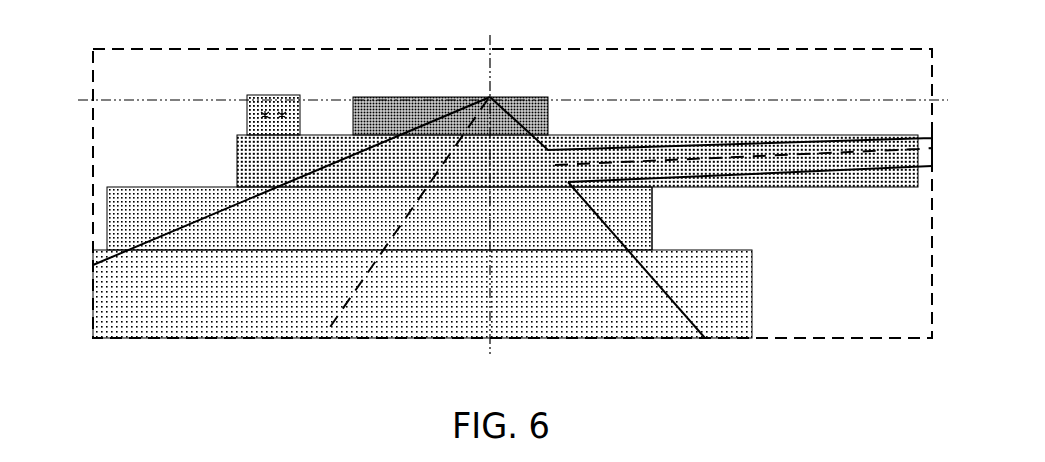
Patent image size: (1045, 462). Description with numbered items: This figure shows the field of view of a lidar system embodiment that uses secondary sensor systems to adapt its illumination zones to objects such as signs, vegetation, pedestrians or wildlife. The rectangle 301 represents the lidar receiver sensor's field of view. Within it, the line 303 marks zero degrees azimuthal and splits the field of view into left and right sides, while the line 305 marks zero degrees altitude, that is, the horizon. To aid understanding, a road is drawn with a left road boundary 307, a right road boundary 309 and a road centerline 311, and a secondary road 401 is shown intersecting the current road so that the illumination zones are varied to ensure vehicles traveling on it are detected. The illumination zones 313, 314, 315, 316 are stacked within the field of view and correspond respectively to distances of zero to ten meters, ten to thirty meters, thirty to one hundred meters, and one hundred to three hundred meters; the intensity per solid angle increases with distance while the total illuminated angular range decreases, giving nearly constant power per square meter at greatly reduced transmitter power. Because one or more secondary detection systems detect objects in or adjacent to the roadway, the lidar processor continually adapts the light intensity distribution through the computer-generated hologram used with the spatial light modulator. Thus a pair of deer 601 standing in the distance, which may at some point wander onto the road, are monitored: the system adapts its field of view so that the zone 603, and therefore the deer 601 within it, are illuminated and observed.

The rectangle 301 is at (620, 50).
The line 303 is at (490, 352).
The line 305 is at (83, 100).
The left road boundary 307 is at (187, 223).
The right road boundary 309 is at (670, 296).
The road centerline 311 is at (362, 282).
The illumination zone 313 is at (756, 294).
The illumination zone 314 is at (656, 231).
The illumination zone 315 is at (233, 175).
The illumination zone 316 is at (553, 117).
The secondary road 401 is at (777, 186).
The pair of deer 601 is at (265, 112).
The zone 603 is at (243, 108).